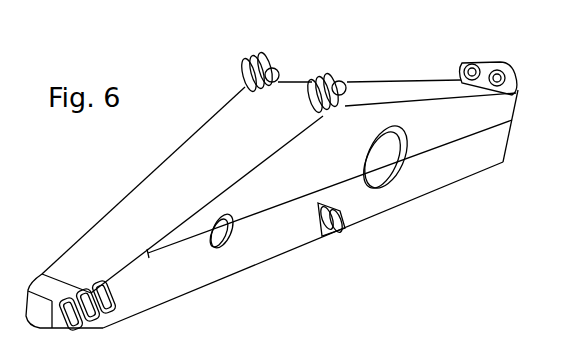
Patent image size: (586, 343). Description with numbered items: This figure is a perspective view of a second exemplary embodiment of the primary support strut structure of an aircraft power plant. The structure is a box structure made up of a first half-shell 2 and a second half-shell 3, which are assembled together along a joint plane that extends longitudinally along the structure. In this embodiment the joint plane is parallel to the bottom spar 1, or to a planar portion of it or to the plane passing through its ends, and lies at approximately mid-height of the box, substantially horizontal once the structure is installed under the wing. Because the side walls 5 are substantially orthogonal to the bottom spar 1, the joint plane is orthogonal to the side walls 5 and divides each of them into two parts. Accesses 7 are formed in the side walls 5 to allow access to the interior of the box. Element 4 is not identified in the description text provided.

The bottom spar 1 is at (444, 190).
The first half-shell 2 is at (498, 143).
The second half-shell 3 is at (518, 103).
The hinge 4 is at (423, 81).
The side walls 5 is at (255, 218).
The accesses 7 is at (388, 138).